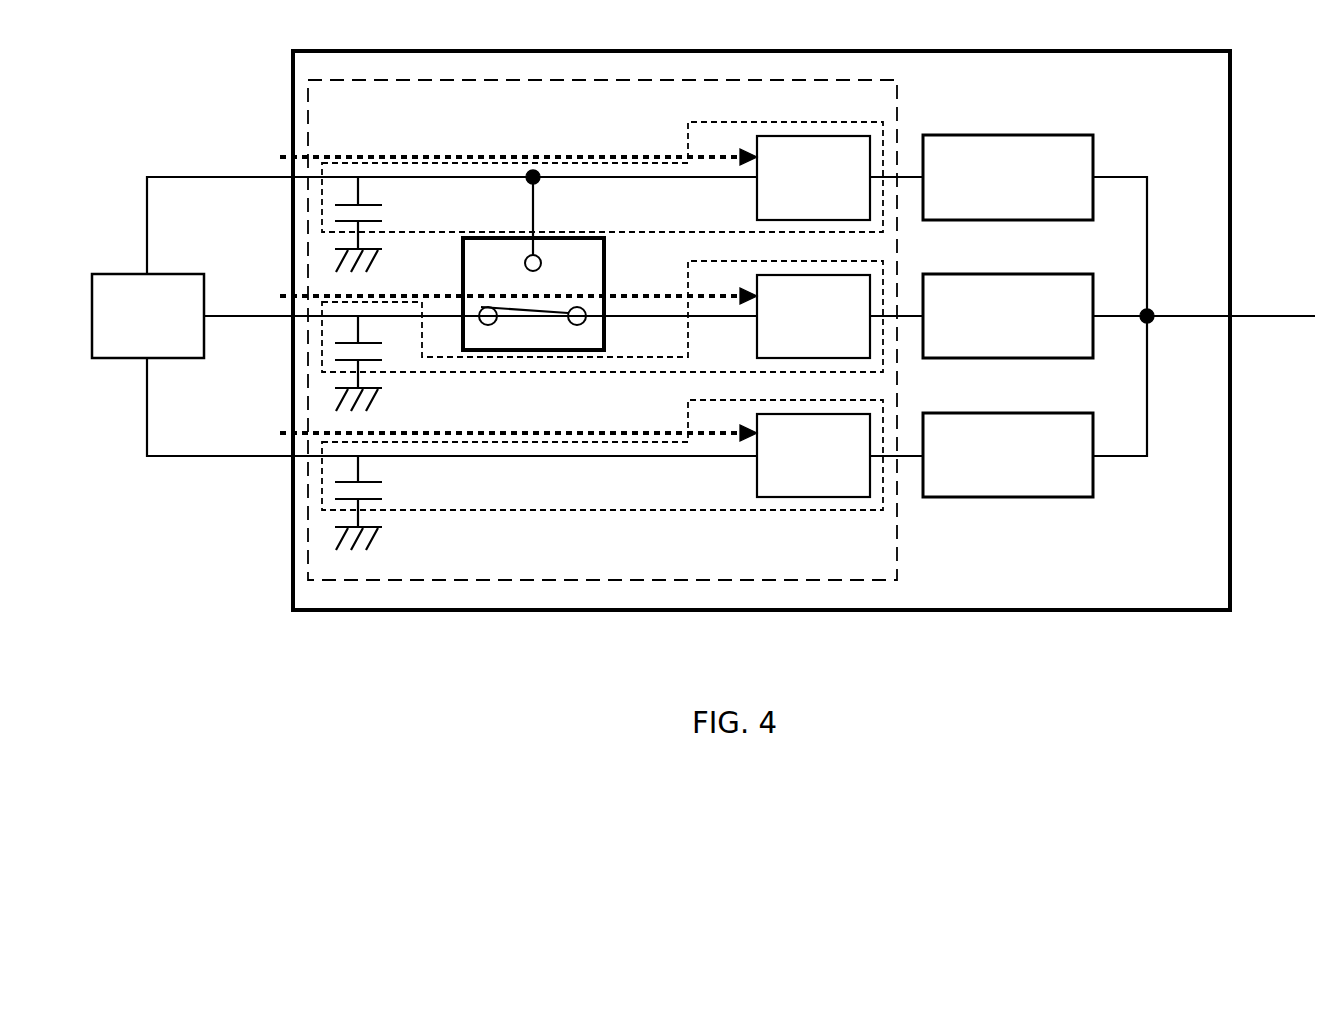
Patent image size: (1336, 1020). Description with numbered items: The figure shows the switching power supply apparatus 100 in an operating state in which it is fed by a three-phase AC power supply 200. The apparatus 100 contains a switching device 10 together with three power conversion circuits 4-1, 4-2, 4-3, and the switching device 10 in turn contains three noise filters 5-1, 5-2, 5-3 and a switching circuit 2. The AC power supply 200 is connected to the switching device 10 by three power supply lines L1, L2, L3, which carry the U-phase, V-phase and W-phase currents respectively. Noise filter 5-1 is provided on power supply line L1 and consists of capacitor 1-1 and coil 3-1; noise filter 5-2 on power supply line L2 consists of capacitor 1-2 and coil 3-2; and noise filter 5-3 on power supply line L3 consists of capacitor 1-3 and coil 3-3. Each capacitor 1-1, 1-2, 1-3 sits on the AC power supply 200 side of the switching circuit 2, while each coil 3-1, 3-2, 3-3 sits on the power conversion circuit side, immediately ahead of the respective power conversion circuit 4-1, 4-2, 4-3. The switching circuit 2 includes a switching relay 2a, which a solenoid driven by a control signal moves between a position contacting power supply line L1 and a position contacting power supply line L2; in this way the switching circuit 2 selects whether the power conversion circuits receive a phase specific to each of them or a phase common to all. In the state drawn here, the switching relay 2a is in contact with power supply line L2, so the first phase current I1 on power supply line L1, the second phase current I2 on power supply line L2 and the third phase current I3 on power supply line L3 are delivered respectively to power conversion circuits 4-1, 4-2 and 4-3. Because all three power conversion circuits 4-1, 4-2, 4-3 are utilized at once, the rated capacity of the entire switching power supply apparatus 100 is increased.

The switching power supply apparatus 100 is at (1158, 50).
The switching device 10 is at (812, 78).
The AC power supply 200 is at (130, 272).
The power supply line L1 is at (260, 177).
The power supply line L2 is at (260, 316).
The power supply line L3 is at (260, 456).
The current I1 is at (400, 155).
The current I2 is at (402, 294).
The current I3 is at (403, 431).
The capacitor 1-1 is at (376, 220).
The capacitor 1-2 is at (376, 360).
The capacitor 1-3 is at (375, 499).
The switching circuit 2 is at (606, 250).
The switching relay 2a is at (550, 314).
The coil 3-1 is at (757, 197).
The coil 3-2 is at (757, 337).
The coil 3-3 is at (757, 476).
The power conversion circuit 4-1 is at (1020, 222).
The power conversion circuit 4-2 is at (1020, 360).
The power conversion circuit 4-3 is at (1020, 500).
The noise filter 5-1 is at (688, 129).
The noise filter 5-2 is at (583, 374).
The noise filter 5-3 is at (582, 512).